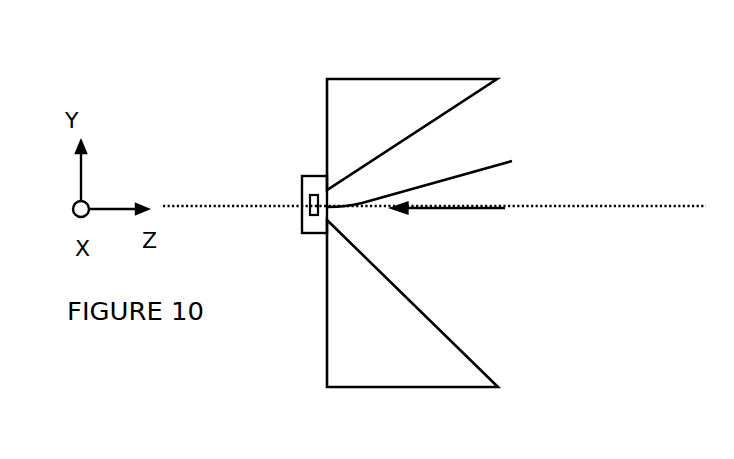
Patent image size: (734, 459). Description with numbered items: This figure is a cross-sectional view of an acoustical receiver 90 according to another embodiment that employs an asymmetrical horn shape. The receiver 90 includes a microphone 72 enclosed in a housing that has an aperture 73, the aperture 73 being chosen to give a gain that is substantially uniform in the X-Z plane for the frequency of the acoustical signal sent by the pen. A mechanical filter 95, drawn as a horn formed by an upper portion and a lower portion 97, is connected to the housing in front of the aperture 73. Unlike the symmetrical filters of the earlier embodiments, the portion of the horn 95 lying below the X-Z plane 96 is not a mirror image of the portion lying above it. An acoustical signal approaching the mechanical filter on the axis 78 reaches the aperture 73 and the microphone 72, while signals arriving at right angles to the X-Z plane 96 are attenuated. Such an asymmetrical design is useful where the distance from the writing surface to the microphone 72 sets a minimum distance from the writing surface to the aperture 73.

The receiver 90 is at (196, 67).
The upper conductive element 97 is at (436, 79).
The mechanical filter 95 is at (396, 388).
The microphone 72 is at (313, 202).
The aperture 73 is at (438, 174).
The axis 78 is at (463, 210).
The X-Z plane 96 is at (674, 207).